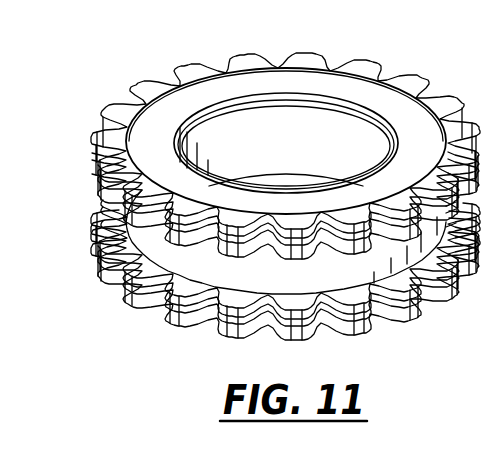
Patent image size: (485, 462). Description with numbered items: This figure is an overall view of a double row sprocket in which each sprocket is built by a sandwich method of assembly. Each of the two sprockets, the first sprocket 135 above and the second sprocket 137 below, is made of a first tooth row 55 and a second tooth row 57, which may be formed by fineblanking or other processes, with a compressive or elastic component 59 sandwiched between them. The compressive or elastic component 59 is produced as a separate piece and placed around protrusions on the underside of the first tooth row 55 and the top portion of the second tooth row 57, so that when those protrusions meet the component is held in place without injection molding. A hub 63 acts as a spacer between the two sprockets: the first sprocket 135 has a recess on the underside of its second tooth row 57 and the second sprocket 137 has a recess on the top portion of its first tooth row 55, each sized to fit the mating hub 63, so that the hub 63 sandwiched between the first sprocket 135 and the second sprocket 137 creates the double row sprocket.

The first tooth row 55 is at (128, 95).
The second tooth row 57 is at (112, 193).
The compressive or elastic component 59 is at (94, 160).
The hub 63 is at (145, 233).
The first sprocket 135 is at (190, 96).
The second sprocket 137 is at (206, 330).